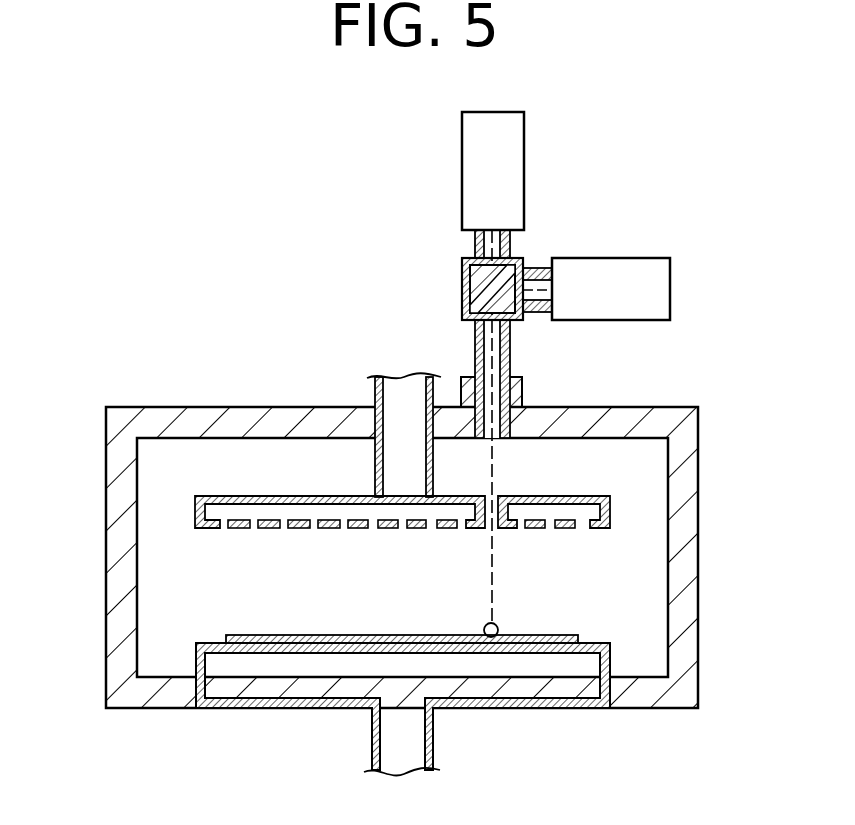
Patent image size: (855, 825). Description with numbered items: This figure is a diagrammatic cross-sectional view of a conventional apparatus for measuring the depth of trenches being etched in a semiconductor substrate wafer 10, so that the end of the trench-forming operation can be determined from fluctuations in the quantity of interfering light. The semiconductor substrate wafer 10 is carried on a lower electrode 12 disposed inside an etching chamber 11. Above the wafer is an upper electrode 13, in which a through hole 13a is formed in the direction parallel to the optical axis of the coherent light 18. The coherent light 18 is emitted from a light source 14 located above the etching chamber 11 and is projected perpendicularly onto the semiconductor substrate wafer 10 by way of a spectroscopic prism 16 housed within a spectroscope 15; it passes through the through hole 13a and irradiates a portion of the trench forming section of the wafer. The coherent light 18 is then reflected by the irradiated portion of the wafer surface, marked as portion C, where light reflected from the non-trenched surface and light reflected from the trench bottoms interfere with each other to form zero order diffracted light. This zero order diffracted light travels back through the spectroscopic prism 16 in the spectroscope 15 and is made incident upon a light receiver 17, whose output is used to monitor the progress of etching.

The semiconductor substrate wafer 10 is at (240, 635).
The etching chamber 11 is at (206, 424).
The lower electrode 12 is at (612, 633).
The upper electrode 13 is at (306, 496).
The through hole 13a is at (498, 500).
The light source 14 is at (505, 166).
The spectroscope 15 is at (462, 262).
The spectroscopic prism 16 is at (462, 282).
The light receiver 17 is at (592, 270).
The coherent light 18 is at (492, 572).
The portion C is at (498, 625).